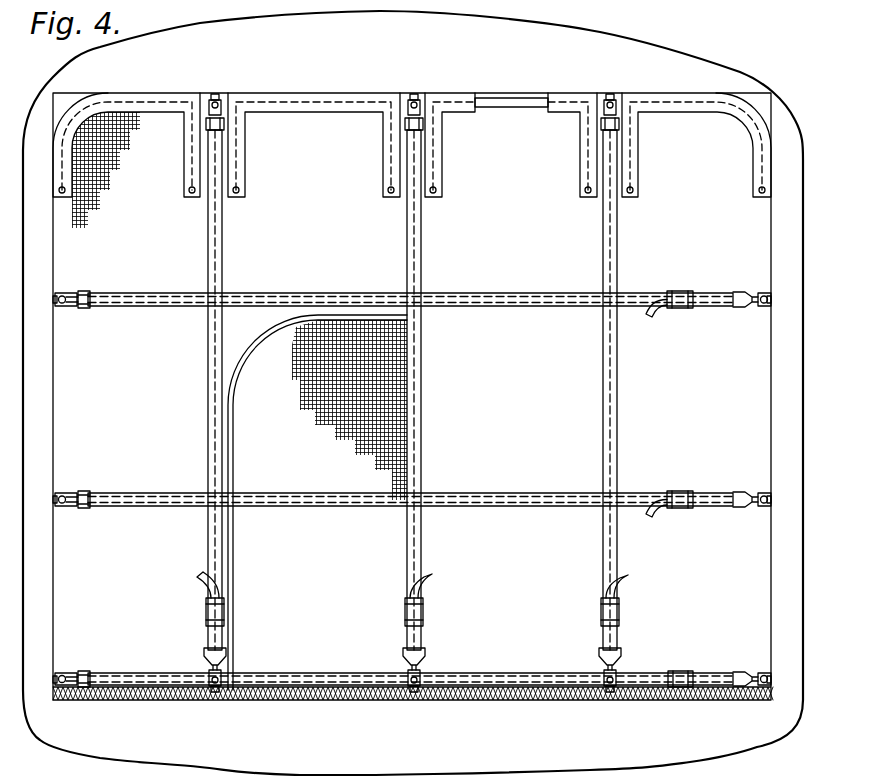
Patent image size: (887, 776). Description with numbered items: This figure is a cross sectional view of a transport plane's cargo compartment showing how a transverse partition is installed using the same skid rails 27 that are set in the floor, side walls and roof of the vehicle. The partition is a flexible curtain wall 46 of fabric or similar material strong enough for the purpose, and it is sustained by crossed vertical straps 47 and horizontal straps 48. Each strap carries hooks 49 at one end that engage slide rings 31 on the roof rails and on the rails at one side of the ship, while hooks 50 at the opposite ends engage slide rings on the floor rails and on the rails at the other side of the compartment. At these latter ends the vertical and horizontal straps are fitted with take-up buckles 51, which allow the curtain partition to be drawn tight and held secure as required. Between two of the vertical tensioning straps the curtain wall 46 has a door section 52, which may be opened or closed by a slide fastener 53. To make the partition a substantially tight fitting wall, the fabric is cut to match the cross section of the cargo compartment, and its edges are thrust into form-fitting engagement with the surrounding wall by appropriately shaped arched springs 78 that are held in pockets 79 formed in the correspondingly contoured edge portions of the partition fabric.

The flexible curtain wall 46 is at (716, 124).
The vertical straps 47 is at (222, 255).
The horizontal straps 48 is at (178, 286).
The hooks 49 is at (223, 119).
The hooks 50 is at (745, 292).
The take-up buckles 51 is at (683, 308).
The door section 52 is at (239, 306).
The slide fastener 53 is at (234, 563).
The skid rails 27 is at (214, 95).
The slide rings 31 is at (222, 101).
The arched springs 78 is at (160, 115).
The pockets 79 is at (113, 97).